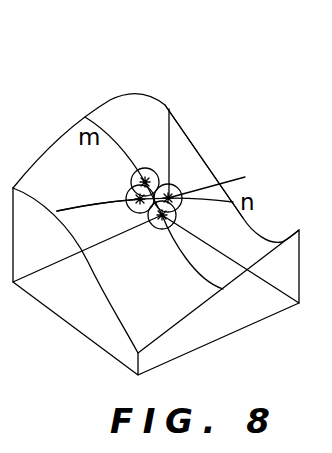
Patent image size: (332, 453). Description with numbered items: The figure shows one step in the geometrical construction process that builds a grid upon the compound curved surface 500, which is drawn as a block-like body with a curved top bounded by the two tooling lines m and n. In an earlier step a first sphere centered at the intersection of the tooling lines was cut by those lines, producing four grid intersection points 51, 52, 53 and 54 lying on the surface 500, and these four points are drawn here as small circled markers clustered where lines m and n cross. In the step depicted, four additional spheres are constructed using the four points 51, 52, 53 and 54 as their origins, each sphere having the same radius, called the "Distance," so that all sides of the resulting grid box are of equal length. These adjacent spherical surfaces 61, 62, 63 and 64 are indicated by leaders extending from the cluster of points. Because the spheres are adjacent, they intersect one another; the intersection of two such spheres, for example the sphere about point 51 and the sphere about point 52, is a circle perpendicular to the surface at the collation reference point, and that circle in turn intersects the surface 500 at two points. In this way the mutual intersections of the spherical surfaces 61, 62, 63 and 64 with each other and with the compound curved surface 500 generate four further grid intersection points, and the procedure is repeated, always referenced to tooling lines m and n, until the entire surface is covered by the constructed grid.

The compound curved surface 500 is at (121, 104).
The grid intersection point 51 is at (148, 178).
The grid intersection point 52 is at (181, 196).
The grid intersection point 53 is at (164, 231).
The grid intersection point 54 is at (114, 213).
The spherical surface 61 is at (183, 131).
The spherical surface 62 is at (222, 179).
The spherical surface 63 is at (151, 229).
The spherical surface 64 is at (125, 197).